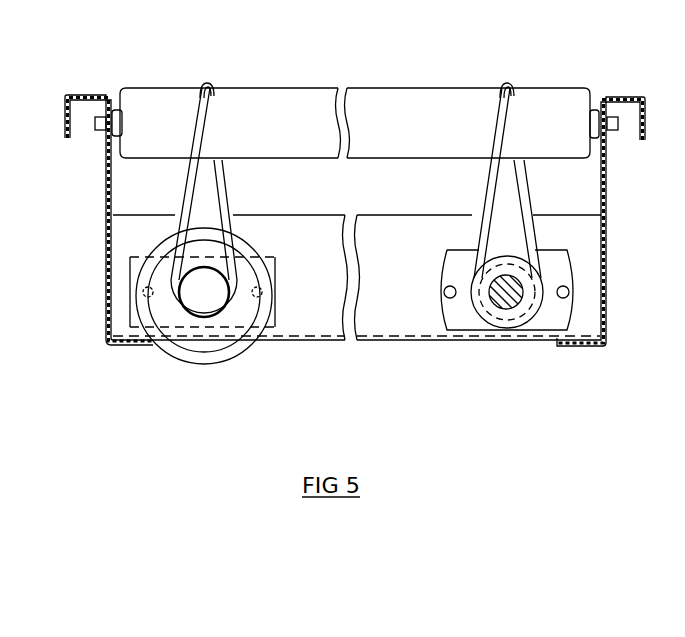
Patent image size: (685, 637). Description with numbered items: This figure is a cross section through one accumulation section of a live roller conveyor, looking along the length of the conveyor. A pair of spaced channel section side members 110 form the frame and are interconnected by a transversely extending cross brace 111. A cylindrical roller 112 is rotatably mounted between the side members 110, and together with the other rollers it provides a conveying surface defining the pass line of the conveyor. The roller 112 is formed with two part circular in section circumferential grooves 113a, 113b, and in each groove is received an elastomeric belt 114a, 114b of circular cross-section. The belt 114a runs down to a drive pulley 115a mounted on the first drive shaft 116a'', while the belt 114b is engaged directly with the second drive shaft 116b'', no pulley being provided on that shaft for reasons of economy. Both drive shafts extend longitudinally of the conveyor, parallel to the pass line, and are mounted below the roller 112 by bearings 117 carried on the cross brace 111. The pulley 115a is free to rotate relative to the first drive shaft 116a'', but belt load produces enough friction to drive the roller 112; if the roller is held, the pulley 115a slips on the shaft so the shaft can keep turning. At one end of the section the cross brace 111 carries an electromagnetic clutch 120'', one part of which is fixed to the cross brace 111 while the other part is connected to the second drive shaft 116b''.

The channel section side member 110 is at (110, 197).
The cross brace 111 is at (393, 328).
The cylindrical roller 112 is at (292, 98).
The circumferential groove 113a is at (517, 87).
The circumferential groove 113b is at (216, 86).
The elastomeric belt 114a is at (530, 200).
The elastomeric belt 114b is at (228, 203).
The drive pulley 115a is at (532, 330).
The first drive shaft 116a'' is at (572, 282).
The second drive shaft 116b'' is at (202, 335).
The bearing 117 is at (467, 322).
The electromagnetic clutch 120'' is at (207, 320).